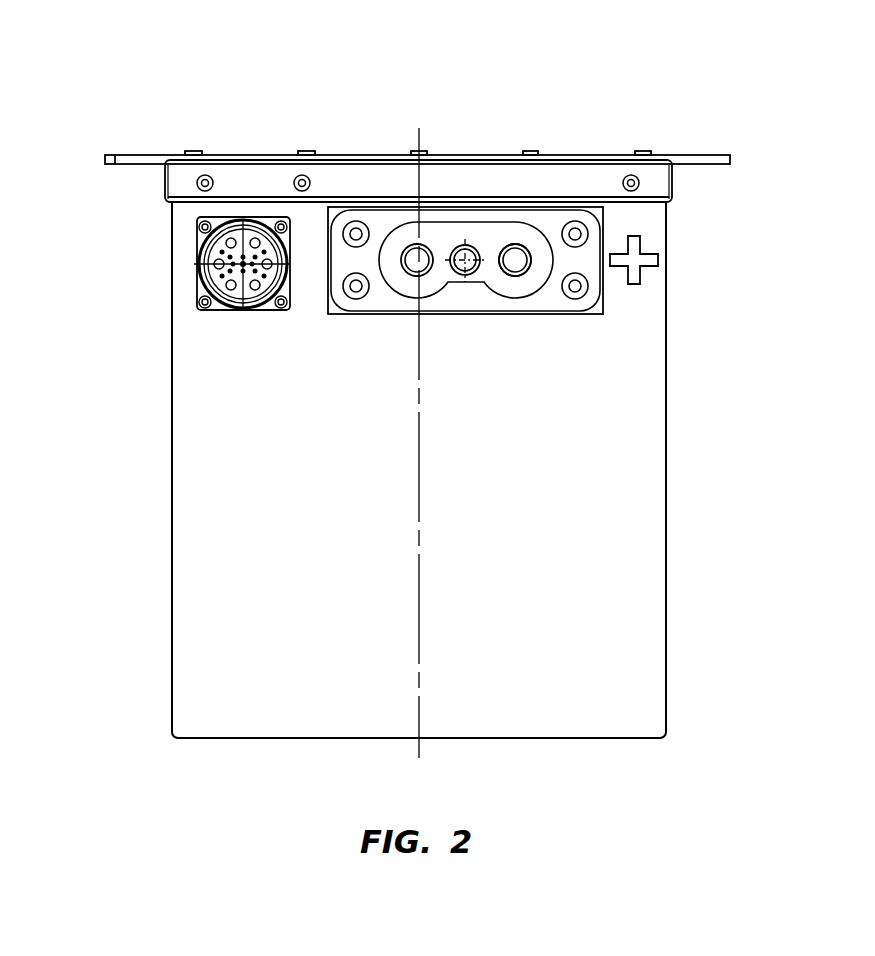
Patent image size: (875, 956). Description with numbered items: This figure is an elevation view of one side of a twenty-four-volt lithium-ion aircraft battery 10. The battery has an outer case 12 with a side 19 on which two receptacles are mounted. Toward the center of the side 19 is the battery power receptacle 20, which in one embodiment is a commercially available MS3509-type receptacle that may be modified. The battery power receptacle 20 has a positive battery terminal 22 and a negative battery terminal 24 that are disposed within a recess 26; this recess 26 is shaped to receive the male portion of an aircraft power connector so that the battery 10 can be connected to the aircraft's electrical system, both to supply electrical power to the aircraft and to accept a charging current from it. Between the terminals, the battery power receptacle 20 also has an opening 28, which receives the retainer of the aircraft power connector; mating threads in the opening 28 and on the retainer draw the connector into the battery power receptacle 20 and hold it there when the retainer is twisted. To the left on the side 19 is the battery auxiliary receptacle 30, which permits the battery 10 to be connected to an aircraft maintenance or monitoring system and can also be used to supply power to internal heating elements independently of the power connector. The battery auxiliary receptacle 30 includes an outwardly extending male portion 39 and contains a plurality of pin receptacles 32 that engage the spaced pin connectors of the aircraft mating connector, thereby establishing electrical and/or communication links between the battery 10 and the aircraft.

The lithium-ion aircraft battery 10 is at (757, 95).
The outer case 12 is at (645, 478).
The side 19 is at (530, 546).
The battery power receptacle 20 is at (535, 262).
The positive battery terminal 22 is at (517, 277).
The negative battery terminal 24 is at (426, 247).
The recess 26 is at (502, 236).
The opening 28 is at (467, 278).
The battery auxiliary receptacle 30 is at (190, 307).
The pin receptacles 32 is at (222, 253).
The male portion 39 is at (229, 297).